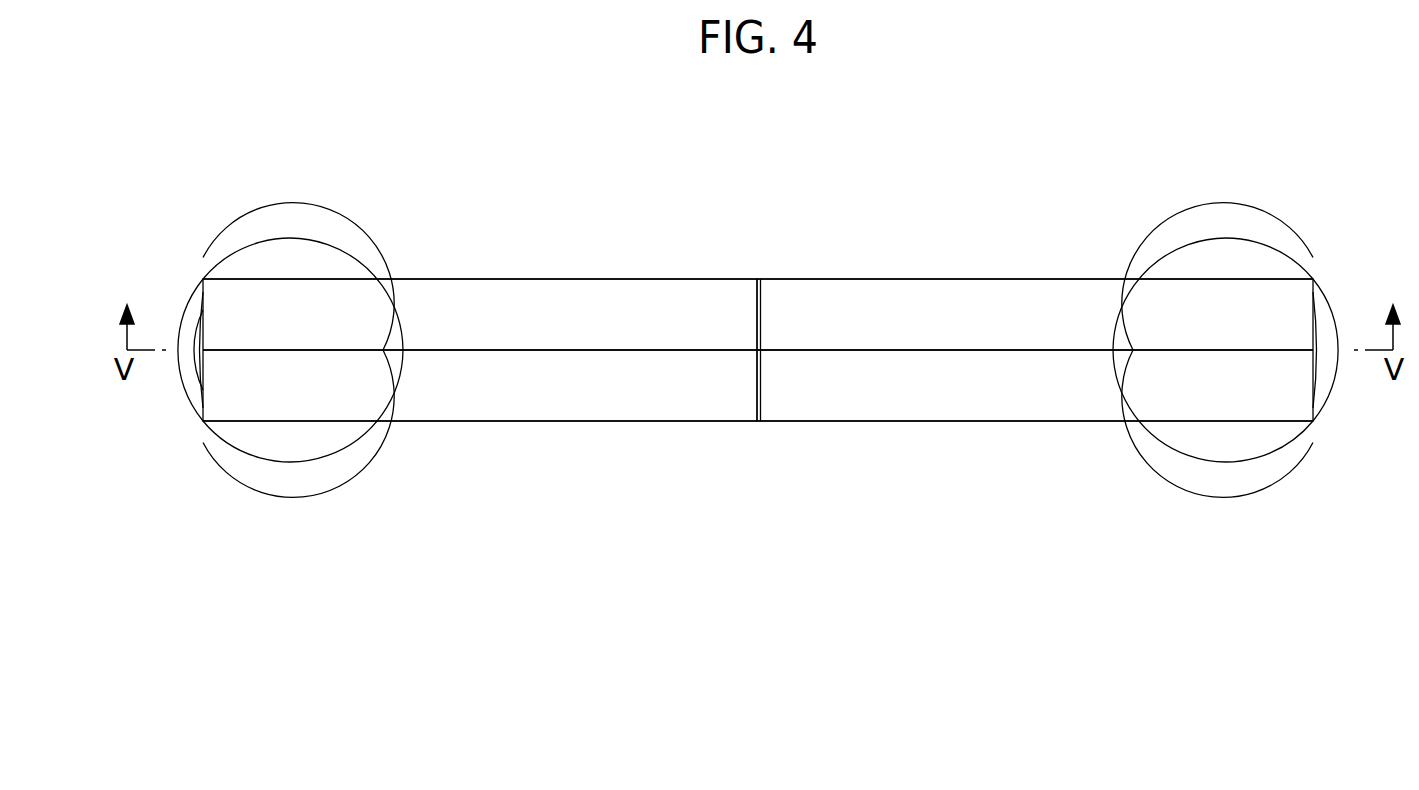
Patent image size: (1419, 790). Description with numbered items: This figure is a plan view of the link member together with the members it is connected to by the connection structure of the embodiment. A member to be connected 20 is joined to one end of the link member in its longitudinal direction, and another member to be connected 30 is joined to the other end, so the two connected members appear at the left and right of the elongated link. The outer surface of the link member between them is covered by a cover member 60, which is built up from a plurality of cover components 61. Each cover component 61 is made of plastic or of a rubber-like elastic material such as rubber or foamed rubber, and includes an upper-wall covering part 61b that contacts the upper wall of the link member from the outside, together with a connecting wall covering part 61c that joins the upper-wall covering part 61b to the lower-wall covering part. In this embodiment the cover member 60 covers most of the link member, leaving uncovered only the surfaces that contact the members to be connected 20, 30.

The member to be connected 20 is at (290, 268).
The member to be connected 30 is at (1227, 237).
The cover member 60 is at (614, 258).
The cover component 61 is at (543, 278).
The upper-wall covering part 61b is at (666, 313).
The connecting wall covering part 61c is at (480, 278).